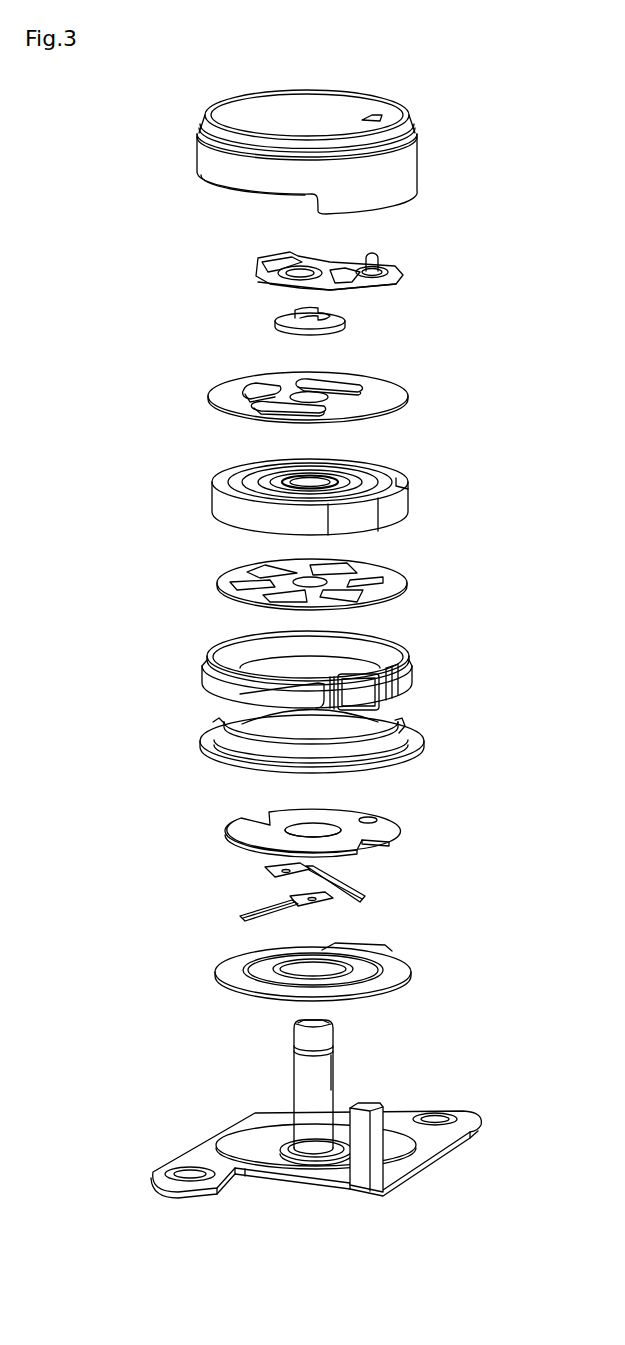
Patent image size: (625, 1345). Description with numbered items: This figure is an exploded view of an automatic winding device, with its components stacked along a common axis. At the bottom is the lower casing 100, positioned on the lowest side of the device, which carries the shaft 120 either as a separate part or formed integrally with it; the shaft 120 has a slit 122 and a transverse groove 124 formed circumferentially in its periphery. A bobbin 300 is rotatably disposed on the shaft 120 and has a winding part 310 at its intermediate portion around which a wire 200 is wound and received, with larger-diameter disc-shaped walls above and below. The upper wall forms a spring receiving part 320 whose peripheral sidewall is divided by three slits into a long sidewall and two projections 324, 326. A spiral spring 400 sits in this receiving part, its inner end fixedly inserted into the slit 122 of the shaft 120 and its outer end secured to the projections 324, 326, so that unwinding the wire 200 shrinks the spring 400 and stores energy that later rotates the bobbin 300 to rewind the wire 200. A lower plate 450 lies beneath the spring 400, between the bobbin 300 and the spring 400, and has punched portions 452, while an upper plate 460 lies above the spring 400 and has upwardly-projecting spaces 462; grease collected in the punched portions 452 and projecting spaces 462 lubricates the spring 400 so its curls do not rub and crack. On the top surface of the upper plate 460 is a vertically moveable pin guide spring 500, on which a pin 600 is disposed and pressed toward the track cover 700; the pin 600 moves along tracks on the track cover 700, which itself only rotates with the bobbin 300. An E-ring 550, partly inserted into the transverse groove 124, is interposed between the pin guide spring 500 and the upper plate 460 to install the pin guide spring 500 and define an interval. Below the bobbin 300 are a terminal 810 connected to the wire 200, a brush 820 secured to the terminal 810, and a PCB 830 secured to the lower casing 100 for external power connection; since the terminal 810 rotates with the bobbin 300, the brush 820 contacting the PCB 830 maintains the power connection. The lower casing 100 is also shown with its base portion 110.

The lower casing 100 is at (316, 1102).
The base plate 110 is at (243, 1153).
The shaft 120 is at (312, 1080).
The slit 122 is at (334, 1028).
The transverse groove 124 is at (300, 1050).
The wire 200 is at (319, 741).
The bobbin 300 is at (300, 667).
The winding part 310 is at (255, 722).
The spring receiving part 320 is at (335, 677).
The projection 324 is at (407, 677).
The projection 326 is at (372, 690).
The spring 400 is at (403, 502).
The lower plate 450 is at (317, 577).
The punched portions 452 is at (245, 584).
The upper plate 460 is at (340, 385).
The projecting spaces 462 is at (343, 380).
The pin guide spring 500 is at (265, 262).
The E-ring 550 is at (345, 322).
The pin 600 is at (372, 256).
The track cover 700 is at (417, 158).
The terminal 810 is at (393, 823).
The brush 820 is at (357, 890).
The PCB 830 is at (393, 969).